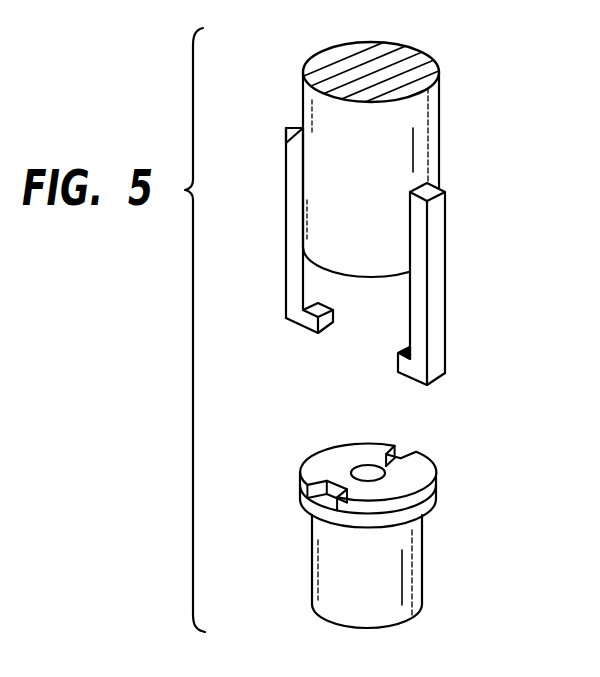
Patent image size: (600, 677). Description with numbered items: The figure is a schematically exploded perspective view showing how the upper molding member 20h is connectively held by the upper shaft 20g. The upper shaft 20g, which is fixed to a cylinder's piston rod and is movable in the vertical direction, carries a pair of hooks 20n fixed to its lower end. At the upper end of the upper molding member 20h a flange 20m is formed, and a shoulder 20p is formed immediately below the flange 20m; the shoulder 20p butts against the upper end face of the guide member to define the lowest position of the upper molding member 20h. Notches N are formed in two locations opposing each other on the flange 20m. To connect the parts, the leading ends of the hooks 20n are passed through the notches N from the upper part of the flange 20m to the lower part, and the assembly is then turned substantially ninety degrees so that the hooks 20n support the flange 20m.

The upper shaft 20g is at (440, 132).
The hooks 20n is at (284, 298).
The upper molding member 20h is at (413, 588).
The shoulder 20p is at (423, 525).
The flange 20m is at (434, 487).
The notches N is at (410, 456).